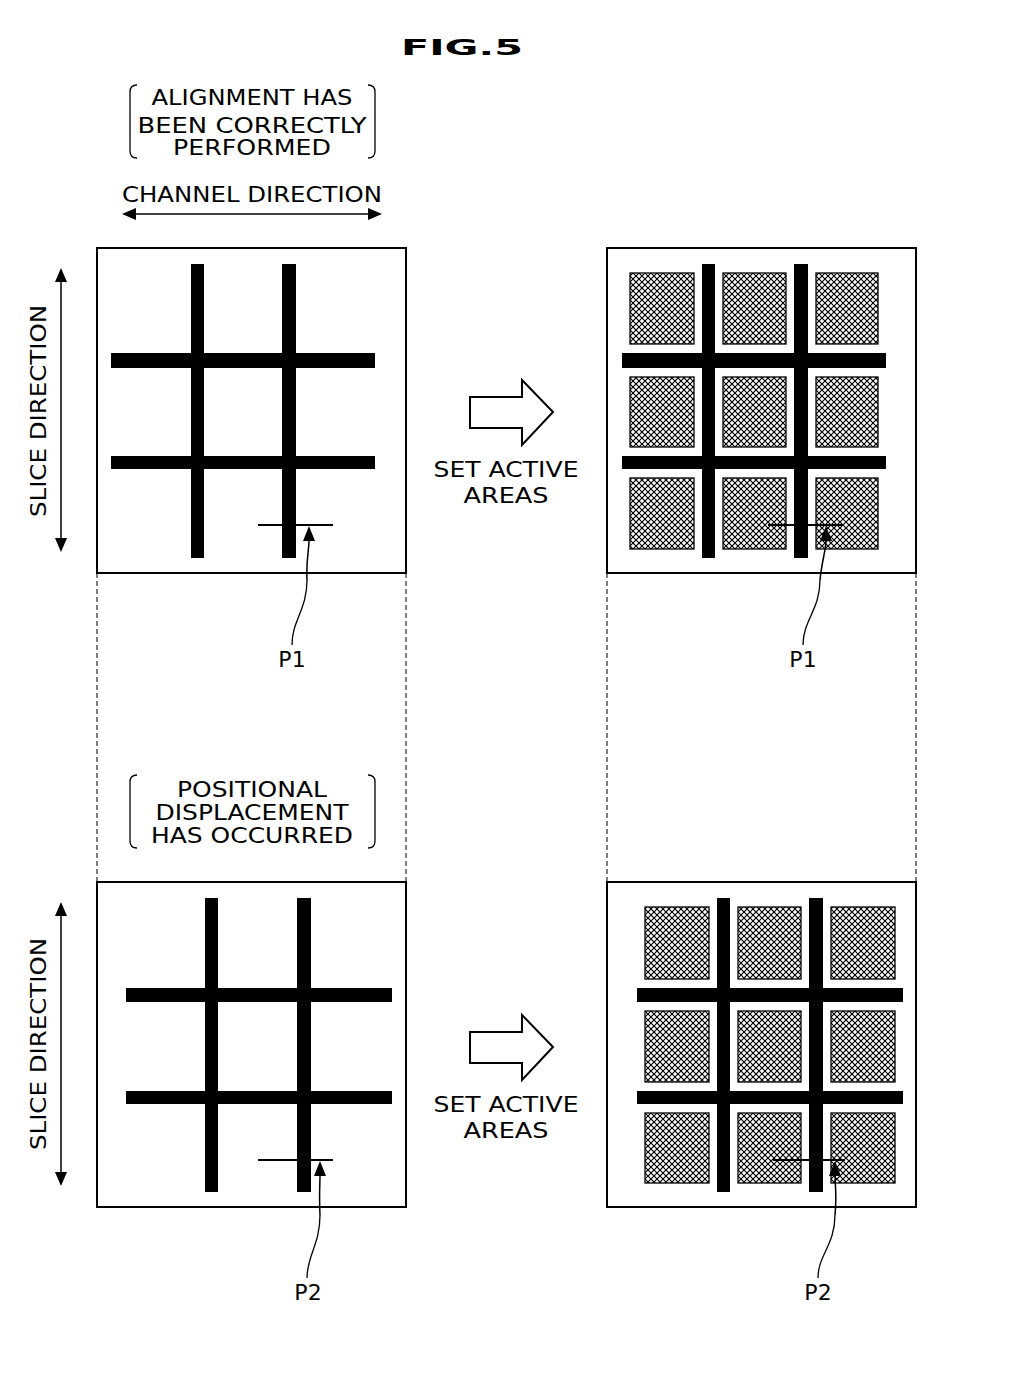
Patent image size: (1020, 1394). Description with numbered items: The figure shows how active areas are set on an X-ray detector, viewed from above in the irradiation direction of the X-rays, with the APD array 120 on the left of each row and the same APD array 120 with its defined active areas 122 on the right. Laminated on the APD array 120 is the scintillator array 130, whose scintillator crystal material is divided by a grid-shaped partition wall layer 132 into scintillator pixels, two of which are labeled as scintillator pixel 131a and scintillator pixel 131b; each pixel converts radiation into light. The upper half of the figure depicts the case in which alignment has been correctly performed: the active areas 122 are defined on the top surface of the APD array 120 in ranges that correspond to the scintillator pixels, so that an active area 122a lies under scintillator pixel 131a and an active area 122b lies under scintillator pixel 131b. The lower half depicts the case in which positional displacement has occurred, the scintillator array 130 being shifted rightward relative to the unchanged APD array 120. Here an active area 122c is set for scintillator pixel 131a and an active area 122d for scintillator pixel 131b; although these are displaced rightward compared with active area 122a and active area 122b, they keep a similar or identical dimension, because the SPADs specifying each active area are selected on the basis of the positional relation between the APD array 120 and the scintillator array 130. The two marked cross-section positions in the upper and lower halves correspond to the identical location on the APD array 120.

The APD array 120 is at (116, 248).
The active areas 122 is at (840, 285).
The active area 122a is at (740, 530).
The active area 122b is at (862, 533).
The active area 122c is at (755, 1165).
The active area 122d is at (876, 1165).
The scintillator array 130 is at (375, 264).
The scintillator pixel 131a is at (230, 530).
The scintillator pixel 131b is at (348, 530).
The partition wall layer 132 is at (375, 358).